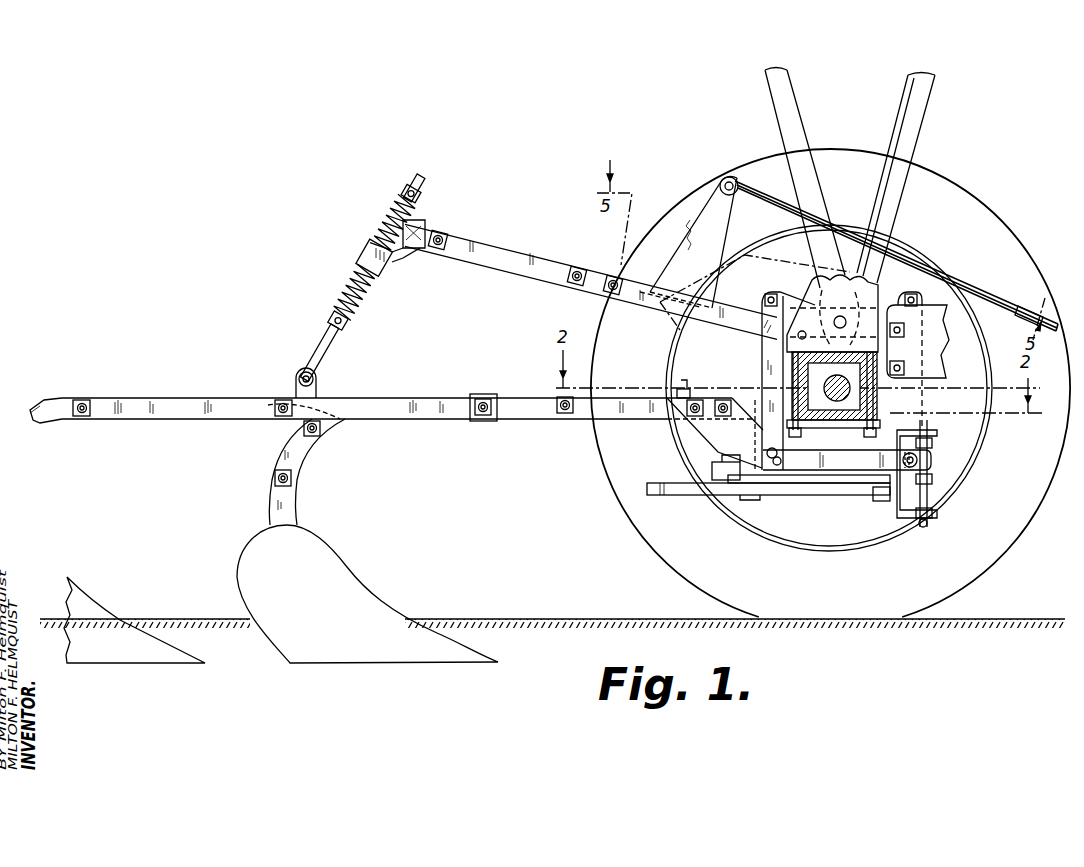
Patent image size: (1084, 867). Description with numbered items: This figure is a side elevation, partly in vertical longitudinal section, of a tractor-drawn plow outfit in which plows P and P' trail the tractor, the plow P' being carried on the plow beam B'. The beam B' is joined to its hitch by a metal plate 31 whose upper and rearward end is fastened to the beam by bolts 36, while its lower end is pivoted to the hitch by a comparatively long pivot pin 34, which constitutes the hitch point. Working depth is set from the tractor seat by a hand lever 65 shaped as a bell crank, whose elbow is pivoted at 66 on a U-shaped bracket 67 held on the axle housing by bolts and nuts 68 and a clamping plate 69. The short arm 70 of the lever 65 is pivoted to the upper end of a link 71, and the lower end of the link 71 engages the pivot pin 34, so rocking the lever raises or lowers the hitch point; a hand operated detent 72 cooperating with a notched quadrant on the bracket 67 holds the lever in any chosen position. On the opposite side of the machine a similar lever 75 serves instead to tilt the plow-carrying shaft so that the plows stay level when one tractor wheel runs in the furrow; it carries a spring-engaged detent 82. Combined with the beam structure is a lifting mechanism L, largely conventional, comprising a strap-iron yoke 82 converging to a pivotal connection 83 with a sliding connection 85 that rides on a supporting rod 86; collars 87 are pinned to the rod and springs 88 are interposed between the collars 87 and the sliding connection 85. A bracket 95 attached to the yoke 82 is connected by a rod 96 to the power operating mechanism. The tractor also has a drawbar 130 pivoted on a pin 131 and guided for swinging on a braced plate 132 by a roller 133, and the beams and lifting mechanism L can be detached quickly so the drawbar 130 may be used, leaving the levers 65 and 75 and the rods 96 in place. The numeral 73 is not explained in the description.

The metal plate 31 is at (713, 427).
The pivot pin 34 is at (777, 464).
The bolts 36 is at (722, 402).
The hand lever 65 is at (922, 135).
The pivot 66 is at (880, 300).
The U-shaped bracket 67 is at (898, 342).
The bolts and nuts 68 is at (870, 405).
The clamping plate 69 is at (847, 460).
The short arm 70 is at (788, 298).
The link 71 is at (764, 352).
The hand operated detent 72 is at (880, 222).
The pivot pin 73 is at (845, 320).
The lever 75 is at (790, 105).
The yoke 82 is at (578, 270).
The pivotal interconnection 83 is at (425, 228).
The sliding connection 85 is at (392, 262).
The supporting rod 86 is at (425, 184).
The collars 87 is at (404, 194).
The springs 88 is at (352, 280).
The bracket 95 is at (706, 240).
The rod 96 is at (1028, 322).
The drawbar 130 is at (692, 495).
The pin 131 is at (885, 492).
The plate 132 is at (765, 483).
The roller 133 is at (718, 456).
The lifting mechanism L is at (526, 247).
The plow beam B' is at (392, 446).
The plow P is at (367, 594).
The plow share P' is at (134, 603).